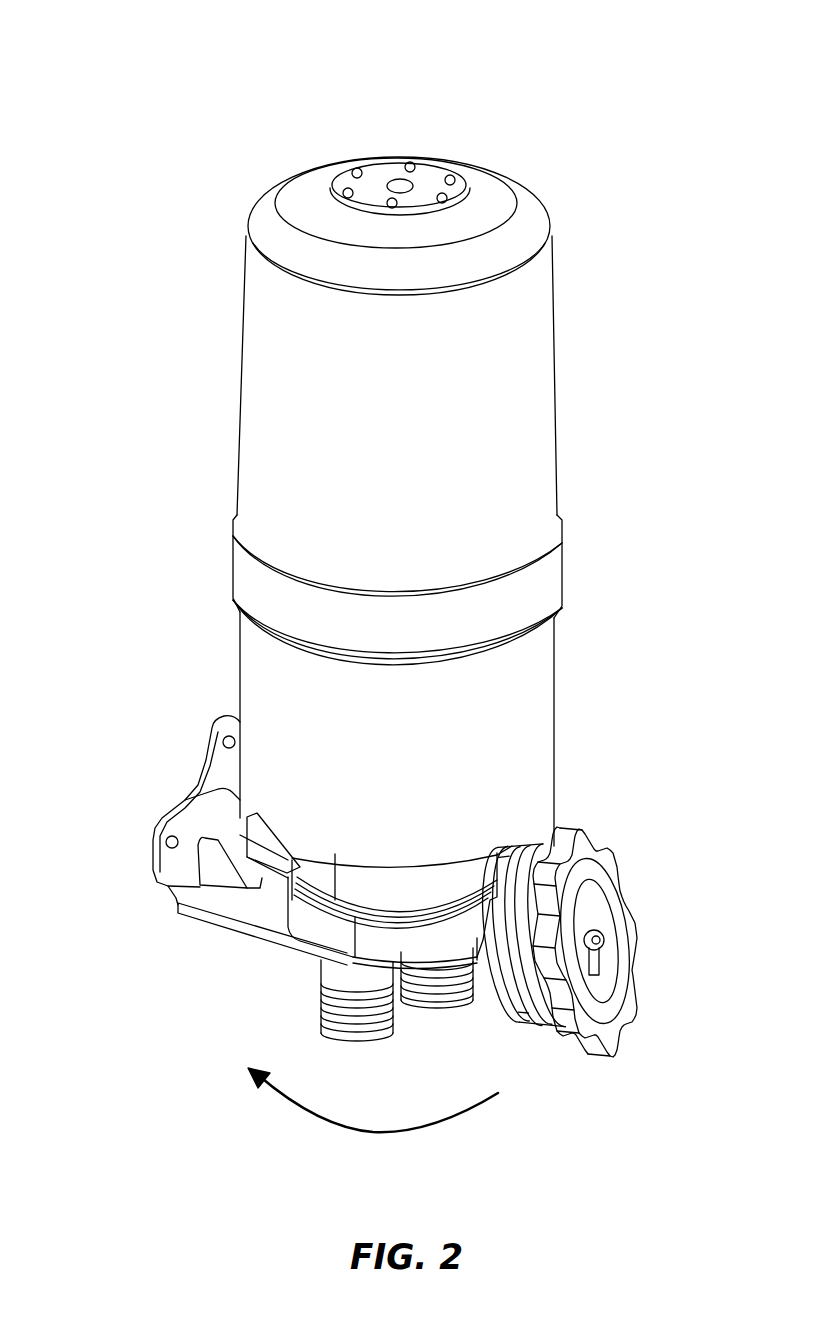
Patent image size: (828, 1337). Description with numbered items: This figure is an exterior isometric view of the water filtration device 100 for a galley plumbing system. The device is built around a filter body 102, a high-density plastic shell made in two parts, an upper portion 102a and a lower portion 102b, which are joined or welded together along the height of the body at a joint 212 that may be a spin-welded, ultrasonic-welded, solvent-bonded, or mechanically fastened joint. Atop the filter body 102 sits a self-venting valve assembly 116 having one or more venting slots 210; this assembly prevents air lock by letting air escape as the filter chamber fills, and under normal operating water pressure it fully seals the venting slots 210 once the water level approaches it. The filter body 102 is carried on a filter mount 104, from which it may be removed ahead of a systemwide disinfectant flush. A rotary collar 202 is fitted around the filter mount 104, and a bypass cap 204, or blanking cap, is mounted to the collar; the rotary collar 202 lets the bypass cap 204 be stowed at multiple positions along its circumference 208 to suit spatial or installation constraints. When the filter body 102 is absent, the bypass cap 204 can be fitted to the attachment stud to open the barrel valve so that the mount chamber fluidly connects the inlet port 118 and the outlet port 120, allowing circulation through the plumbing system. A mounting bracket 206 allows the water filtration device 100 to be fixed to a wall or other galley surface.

The water filtration device 100 is at (72, 70).
The filter body 102 is at (424, 482).
The upper portion 102a is at (262, 375).
The lower portion 102b is at (530, 718).
The filter mount 104 is at (397, 880).
The self-venting valve assembly 116 is at (418, 178).
The inlet port 118 is at (348, 1015).
The outlet port 120 is at (437, 1000).
The rotary collar 202 is at (323, 928).
The bypass cap 204 is at (600, 912).
The mounting bracket 206 is at (242, 910).
The circumference 208 is at (332, 1122).
The venting slots 210 is at (397, 180).
The joint 212 is at (240, 552).